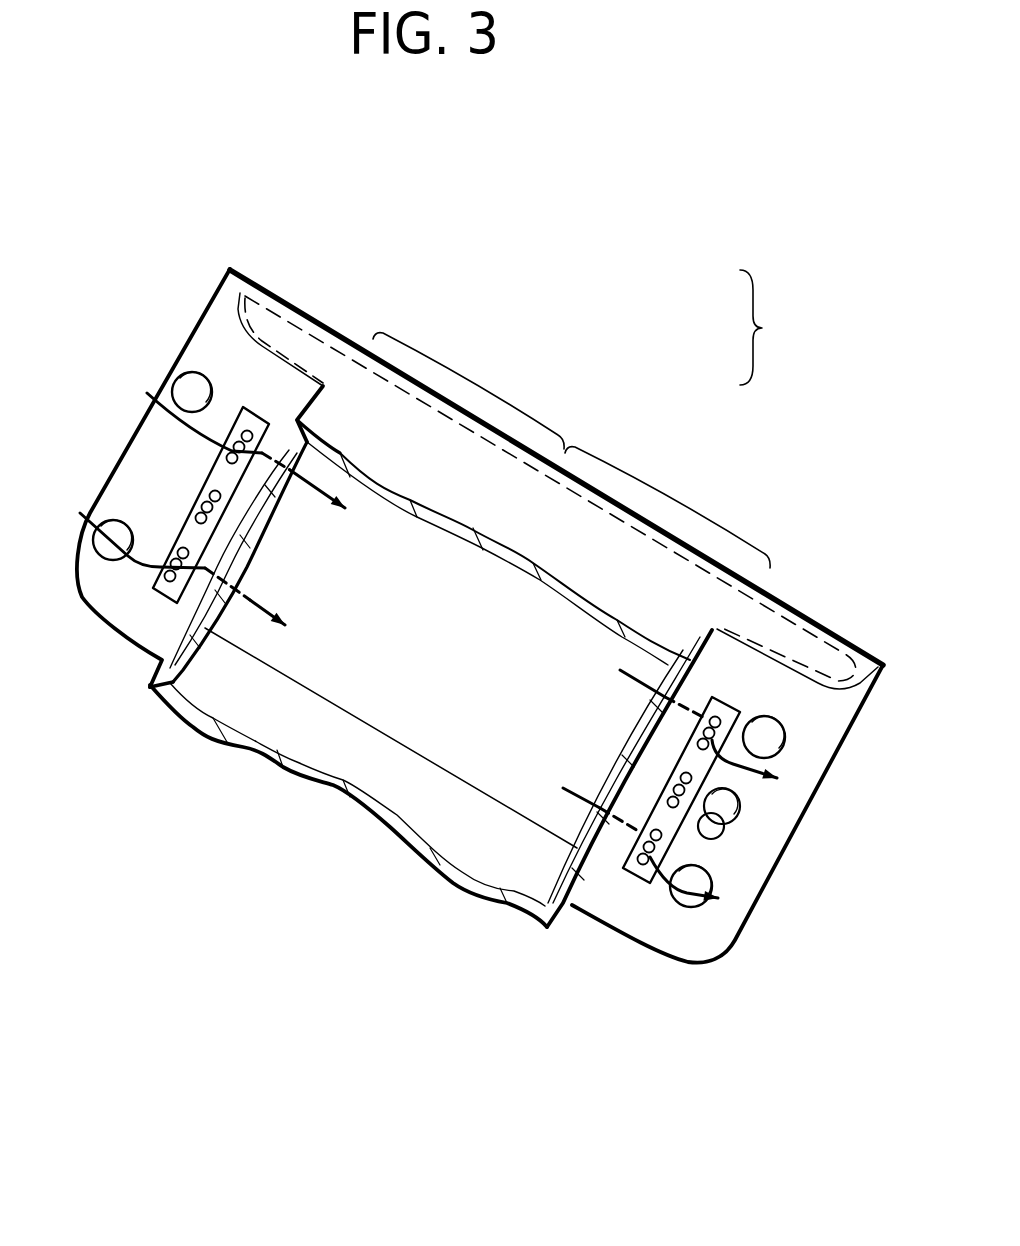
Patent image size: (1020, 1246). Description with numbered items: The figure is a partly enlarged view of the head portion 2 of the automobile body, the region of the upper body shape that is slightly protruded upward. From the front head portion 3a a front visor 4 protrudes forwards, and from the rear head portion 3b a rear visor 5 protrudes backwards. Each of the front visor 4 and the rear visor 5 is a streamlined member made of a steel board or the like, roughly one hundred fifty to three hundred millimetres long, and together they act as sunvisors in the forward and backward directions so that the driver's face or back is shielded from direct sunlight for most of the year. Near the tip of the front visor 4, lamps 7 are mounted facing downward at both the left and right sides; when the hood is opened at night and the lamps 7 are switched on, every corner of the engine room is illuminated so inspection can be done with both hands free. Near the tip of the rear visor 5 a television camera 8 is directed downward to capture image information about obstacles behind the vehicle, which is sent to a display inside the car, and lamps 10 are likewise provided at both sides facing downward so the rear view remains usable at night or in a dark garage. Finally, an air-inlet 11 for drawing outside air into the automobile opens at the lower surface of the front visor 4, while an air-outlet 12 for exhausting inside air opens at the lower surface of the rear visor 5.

The head portion 2 is at (764, 327).
The front head portion 3a is at (475, 380).
The rear head portion 3b is at (673, 496).
The front visor 4 is at (283, 338).
The rear visor 5 is at (807, 650).
The lamps 7 is at (121, 537).
The television camera 8 is at (710, 832).
The lamps 10 is at (768, 742).
The air-inlet 11 is at (153, 587).
The air-outlet 12 is at (631, 877).